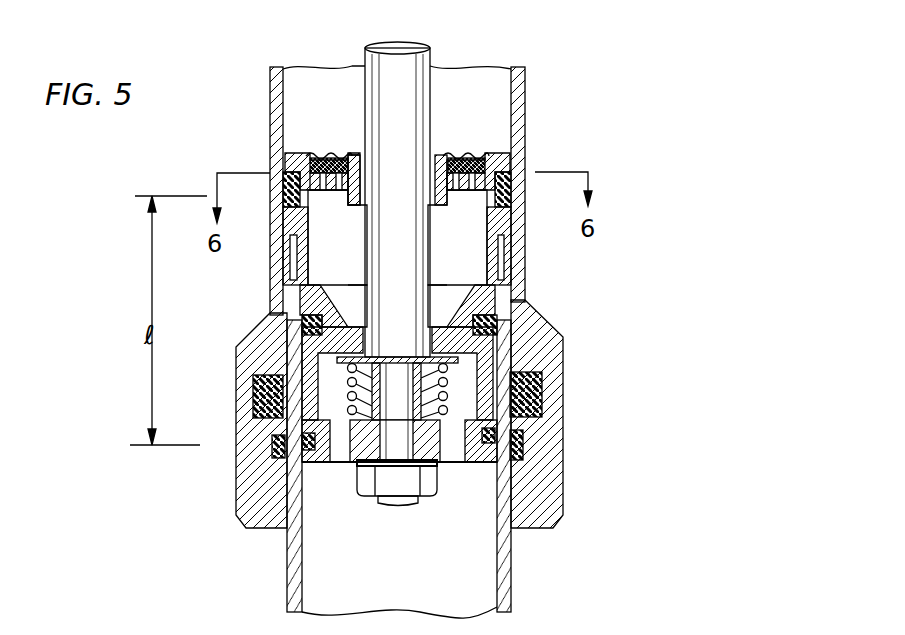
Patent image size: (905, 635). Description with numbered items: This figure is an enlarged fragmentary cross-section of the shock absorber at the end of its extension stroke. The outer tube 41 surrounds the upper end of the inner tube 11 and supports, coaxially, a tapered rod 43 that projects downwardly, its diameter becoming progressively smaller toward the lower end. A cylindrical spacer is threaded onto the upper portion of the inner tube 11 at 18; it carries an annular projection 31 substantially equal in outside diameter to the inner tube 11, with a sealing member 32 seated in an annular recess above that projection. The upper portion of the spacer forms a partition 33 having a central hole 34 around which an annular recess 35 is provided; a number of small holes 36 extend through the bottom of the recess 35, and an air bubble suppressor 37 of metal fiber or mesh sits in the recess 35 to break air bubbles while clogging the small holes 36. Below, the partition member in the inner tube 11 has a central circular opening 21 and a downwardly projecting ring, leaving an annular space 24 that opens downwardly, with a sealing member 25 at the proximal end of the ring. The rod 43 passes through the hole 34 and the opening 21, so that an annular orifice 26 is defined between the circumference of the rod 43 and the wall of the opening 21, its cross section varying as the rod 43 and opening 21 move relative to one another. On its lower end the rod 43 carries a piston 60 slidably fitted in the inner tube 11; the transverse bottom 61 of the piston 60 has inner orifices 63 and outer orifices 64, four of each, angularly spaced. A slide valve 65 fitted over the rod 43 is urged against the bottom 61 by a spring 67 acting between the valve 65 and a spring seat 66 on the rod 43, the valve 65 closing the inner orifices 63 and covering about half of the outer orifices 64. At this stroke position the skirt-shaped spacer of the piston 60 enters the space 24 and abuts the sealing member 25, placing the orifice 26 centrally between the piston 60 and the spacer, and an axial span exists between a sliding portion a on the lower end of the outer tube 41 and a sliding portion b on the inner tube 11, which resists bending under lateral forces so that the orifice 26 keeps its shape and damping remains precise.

The inner tube 11 is at (511, 586).
The threaded engagement 18 is at (500, 258).
The central circular opening 21 is at (382, 320).
The annular space 24 is at (540, 335).
The sealing member 25 is at (522, 316).
The annular orifice 26 is at (428, 324).
The annular projection 31 is at (500, 222).
The sealing member 32 is at (500, 198).
The partition 33 is at (495, 178).
The central hole 34 is at (428, 172).
The annular recess 35 is at (322, 155).
The small holes 36 is at (327, 193).
The air bubble suppressor 37 is at (462, 156).
The outer tube 41 is at (525, 97).
The rod 43 is at (385, 68).
The piston 60 is at (465, 463).
The bottom of piston 61 is at (372, 480).
The inner orifices 63 is at (455, 470).
The outer orifices 64 is at (339, 457).
The slide valve 65 is at (300, 432).
The spring seat 66 is at (300, 350).
The spring 67 is at (455, 380).
The sliding portion a is at (530, 442).
The sliding portion b is at (283, 186).